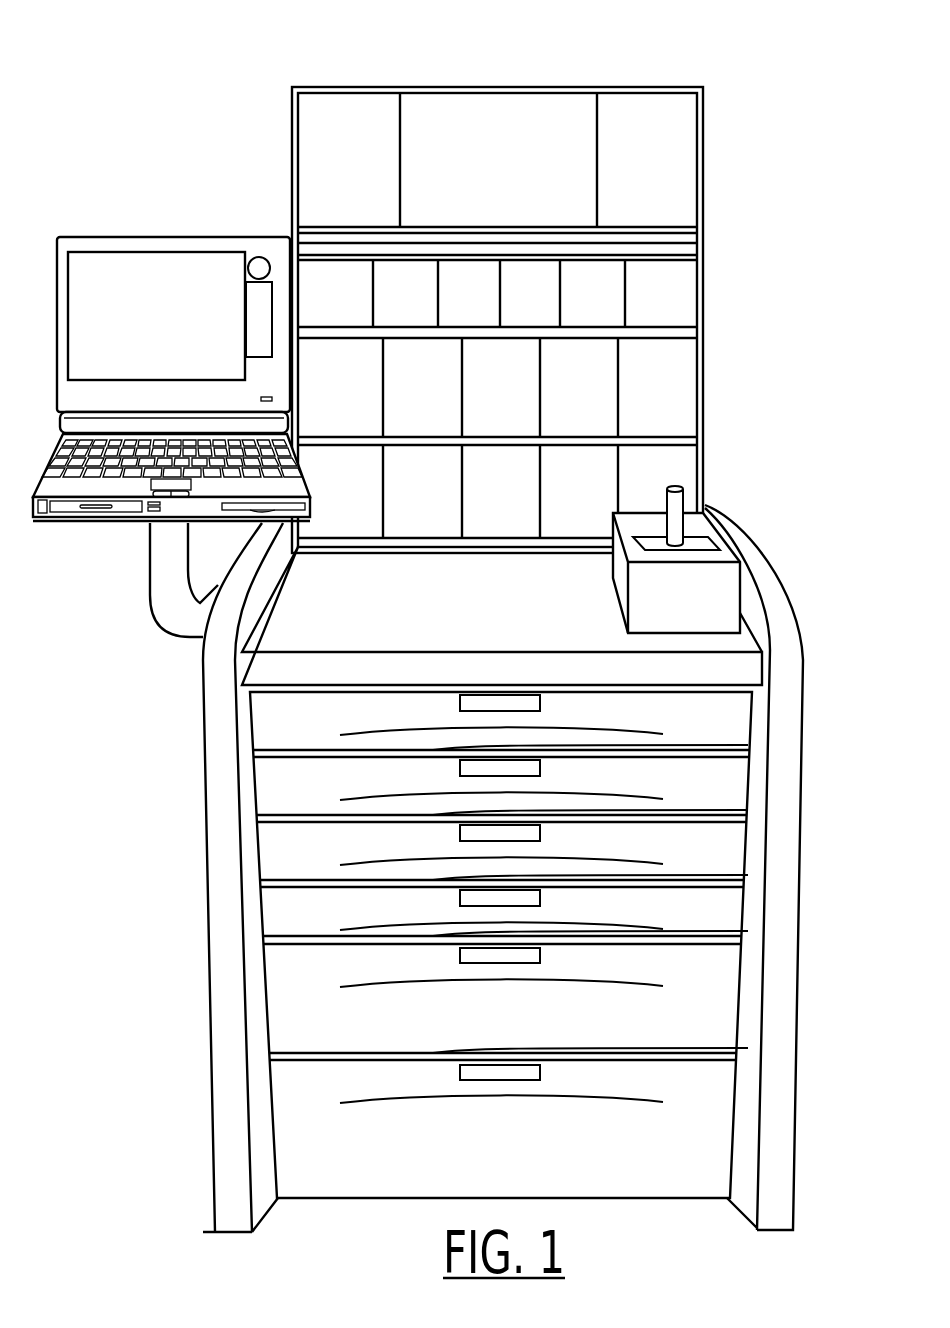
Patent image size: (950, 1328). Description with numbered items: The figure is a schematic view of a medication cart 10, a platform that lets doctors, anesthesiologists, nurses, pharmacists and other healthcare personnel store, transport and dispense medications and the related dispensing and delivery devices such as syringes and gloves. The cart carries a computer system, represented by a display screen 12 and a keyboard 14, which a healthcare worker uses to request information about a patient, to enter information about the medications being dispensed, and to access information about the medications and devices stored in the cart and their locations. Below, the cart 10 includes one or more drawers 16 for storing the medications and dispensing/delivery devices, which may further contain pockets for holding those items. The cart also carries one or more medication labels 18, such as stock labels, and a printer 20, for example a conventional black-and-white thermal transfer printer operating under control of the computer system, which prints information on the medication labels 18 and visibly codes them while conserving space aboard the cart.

The medication cart 10 is at (162, 82).
The display screen 12 is at (182, 237).
The keyboard 14 is at (128, 523).
The drawers 16 is at (672, 153).
The medication labels 18 is at (675, 508).
The printer 20 is at (707, 590).